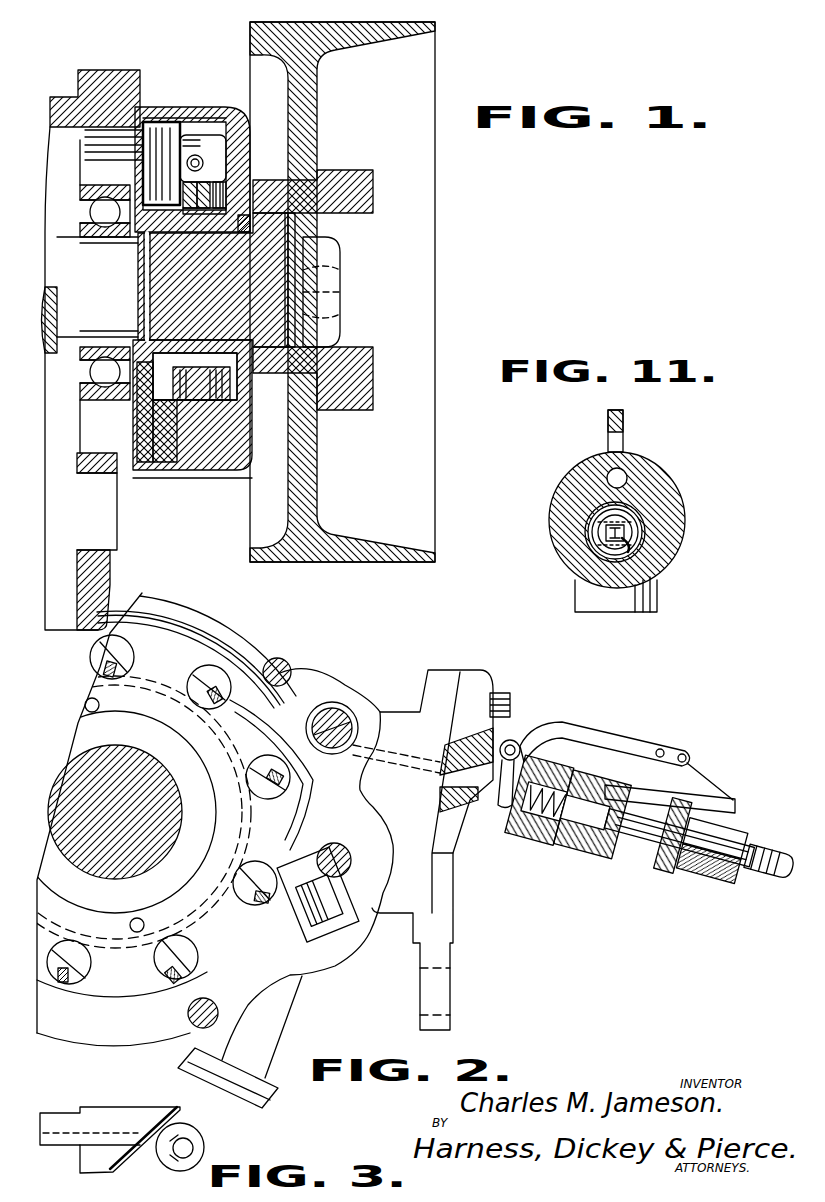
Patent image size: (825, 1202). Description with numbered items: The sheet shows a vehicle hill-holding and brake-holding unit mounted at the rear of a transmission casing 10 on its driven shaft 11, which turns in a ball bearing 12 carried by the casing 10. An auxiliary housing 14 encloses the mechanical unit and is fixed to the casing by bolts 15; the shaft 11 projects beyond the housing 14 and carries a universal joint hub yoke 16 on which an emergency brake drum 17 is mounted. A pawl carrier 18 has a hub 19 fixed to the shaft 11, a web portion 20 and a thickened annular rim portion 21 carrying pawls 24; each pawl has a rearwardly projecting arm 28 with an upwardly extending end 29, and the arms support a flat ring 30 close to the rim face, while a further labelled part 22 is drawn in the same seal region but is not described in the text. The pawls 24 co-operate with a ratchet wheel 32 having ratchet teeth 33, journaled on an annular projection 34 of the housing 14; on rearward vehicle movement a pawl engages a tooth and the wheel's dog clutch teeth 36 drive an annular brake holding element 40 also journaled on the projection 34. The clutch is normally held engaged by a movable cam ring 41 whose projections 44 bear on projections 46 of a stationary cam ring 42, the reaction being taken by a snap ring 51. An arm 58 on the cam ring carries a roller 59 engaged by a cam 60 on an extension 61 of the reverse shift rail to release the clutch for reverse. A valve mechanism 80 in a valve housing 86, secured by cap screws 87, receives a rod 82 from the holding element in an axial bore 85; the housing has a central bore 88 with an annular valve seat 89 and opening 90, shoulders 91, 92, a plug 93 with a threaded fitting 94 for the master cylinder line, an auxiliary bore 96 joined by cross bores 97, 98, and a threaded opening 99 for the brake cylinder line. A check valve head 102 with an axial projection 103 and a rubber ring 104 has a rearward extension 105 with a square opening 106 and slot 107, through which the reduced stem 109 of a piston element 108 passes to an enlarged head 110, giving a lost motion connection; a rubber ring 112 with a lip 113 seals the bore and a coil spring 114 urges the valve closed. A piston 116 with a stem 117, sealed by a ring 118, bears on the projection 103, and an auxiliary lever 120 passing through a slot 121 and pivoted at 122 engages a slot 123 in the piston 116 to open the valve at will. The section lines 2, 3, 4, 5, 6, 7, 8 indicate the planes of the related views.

In FIG. 1, the section line 2— 2 is at (117, 70).
In FIG. 2, the section line 3— 3 is at (380, 841).
In FIG. 1, the section line 4— 4 is at (173, 100).
In FIG. 1, the section line 5— 5 is at (247, 117).
In FIG. 1, the section line 6— 6 is at (184, 100).
In FIG. 1, the section line 7— 7 is at (185, 72).
In FIG. 1, the section line 8— 8 is at (202, 83).
In FIG. 1, the transmission casing 10 is at (114, 585).
In FIG. 1, the driven shaft 11 is at (116, 310).
In FIG. 2, the driven shaft 11 is at (686, 691).
In FIG. 1, the ball bearing 12 is at (92, 372).
In FIG. 1, the auxiliary housing 14 is at (240, 460).
In FIG. 2, the auxiliary housing 14 is at (340, 695).
In FIG. 2, the bolts 15 is at (262, 705).
In FIG. 1, the universal joint hub yoke 16 is at (372, 390).
In FIG. 1, the emergency brake drum 17 is at (418, 467).
In FIG. 1, the pawl carrier 18 is at (150, 235).
In FIG. 2, the pawl carrier 18 is at (152, 654).
In FIG. 1, the hub 19 is at (167, 247).
In FIG. 1, the web portion 20 is at (140, 240).
In FIG. 1, the annular rim portion 21 is at (168, 122).
In FIG. 1, the seal washer 22 is at (143, 150).
In FIG. 2, the seal washer 22 is at (195, 648).
In FIG. 1, the pawls 24 is at (143, 166).
In FIG. 2, the pawls 24 is at (225, 662).
In FIG. 1, the arm 28 is at (140, 142).
In FIG. 1, the upwardly extending end 29 is at (135, 133).
In FIG. 2, the upwardly extending end 29 is at (279, 662).
In FIG. 1, the flat ring 30 is at (160, 125).
In FIG. 2, the flat ring 30 is at (306, 690).
In FIG. 1, the ratchet wheel 32 is at (105, 293).
In FIG. 1, the ratchet teeth 33 is at (160, 416).
In FIG. 1, the annular projection 34 is at (212, 215).
In FIG. 1, the dog clutch teeth 36 is at (188, 205).
In FIG. 1, the brake holding element 40 is at (200, 168).
In FIG. 1, the movable cam ring 41 is at (248, 153).
In FIG. 1, the stationary cam ring 42 is at (248, 178).
In FIG. 1, the projections 44 is at (248, 166).
In FIG. 1, the projections 46 is at (248, 191).
In FIG. 1, the snap ring 51 is at (148, 245).
In FIG. 3, the arm 58 is at (185, 1138).
In FIG. 2, the roller 59 is at (332, 908).
In FIG. 3, the roller 59 is at (203, 1145).
In FIG. 2, the cam 60 is at (300, 870).
In FIG. 3, the cam 60 is at (122, 1160).
In FIG. 2, the extension of reverse gear shift rail 61 is at (352, 860).
In FIG. 3, the extension of reverse gear shift rail 61 is at (63, 1115).
In FIG. 11, the valve mechanism 80 is at (650, 455).
In FIG. 2, the valve mechanism 80 is at (633, 880).
In FIG. 2, the rod 82 is at (478, 768).
In FIG. 2, the axial bore 85 is at (484, 848).
In FIG. 2, the valve housing 86 is at (603, 863).
In FIG. 2, the cap screws 87 is at (497, 703).
In FIG. 2, the central longitudinal bore 88 is at (635, 875).
In FIG. 2, the annular valve seat 89 is at (570, 857).
In FIG. 2, the opening 90 is at (558, 847).
In FIG. 2, the shoulder 91 is at (683, 775).
In FIG. 2, the shoulder 92 is at (690, 782).
In FIG. 2, the plug 93 is at (703, 887).
In FIG. 2, the externally threaded fitting 94 is at (765, 872).
In FIG. 11, the auxiliary longitudinal bore 96 is at (628, 478).
In FIG. 2, the auxiliary longitudinal bore 96 is at (637, 740).
In FIG. 2, the cross bore 97 is at (672, 875).
In FIG. 2, the second cross bore 98 is at (552, 815).
In FIG. 2, the threaded opening 99 is at (597, 853).
In FIG. 11, the check valve head 102 is at (636, 516).
In FIG. 2, the check valve head 102 is at (580, 860).
In FIG. 2, the axial cylindrical projection 103 is at (643, 775).
In FIG. 2, the annular ring 104 is at (603, 738).
In FIG. 11, the cylindrical rearward extension 105 is at (640, 528).
In FIG. 2, the cylindrical rearward extension 105 is at (612, 778).
In FIG. 2, the square transverse opening 106 is at (687, 757).
In FIG. 11, the slot 107 is at (608, 530).
In FIG. 2, the cylindrical piston element 108 is at (702, 842).
In FIG. 11, the reduced stem 109 is at (640, 548).
In FIG. 2, the enlarged head 110 is at (643, 748).
In FIG. 2, the ring 112 is at (643, 877).
In FIG. 2, the axially extending annular lip 113 is at (687, 767).
In FIG. 11, the coil spring 114 is at (583, 556).
In FIG. 2, the coil spring 114 is at (618, 873).
In FIG. 2, the piston 116 is at (548, 810).
In FIG. 2, the stem 117 is at (565, 745).
In FIG. 2, the sealing ring 118 is at (545, 765).
In FIG. 11, the auxiliary lever 120 is at (620, 420).
In FIG. 2, the auxiliary lever 120 is at (612, 722).
In FIG. 2, the slot 121 is at (547, 766).
In FIG. 2, the pivot 122 is at (512, 742).
In FIG. 2, the slot 123 is at (488, 834).